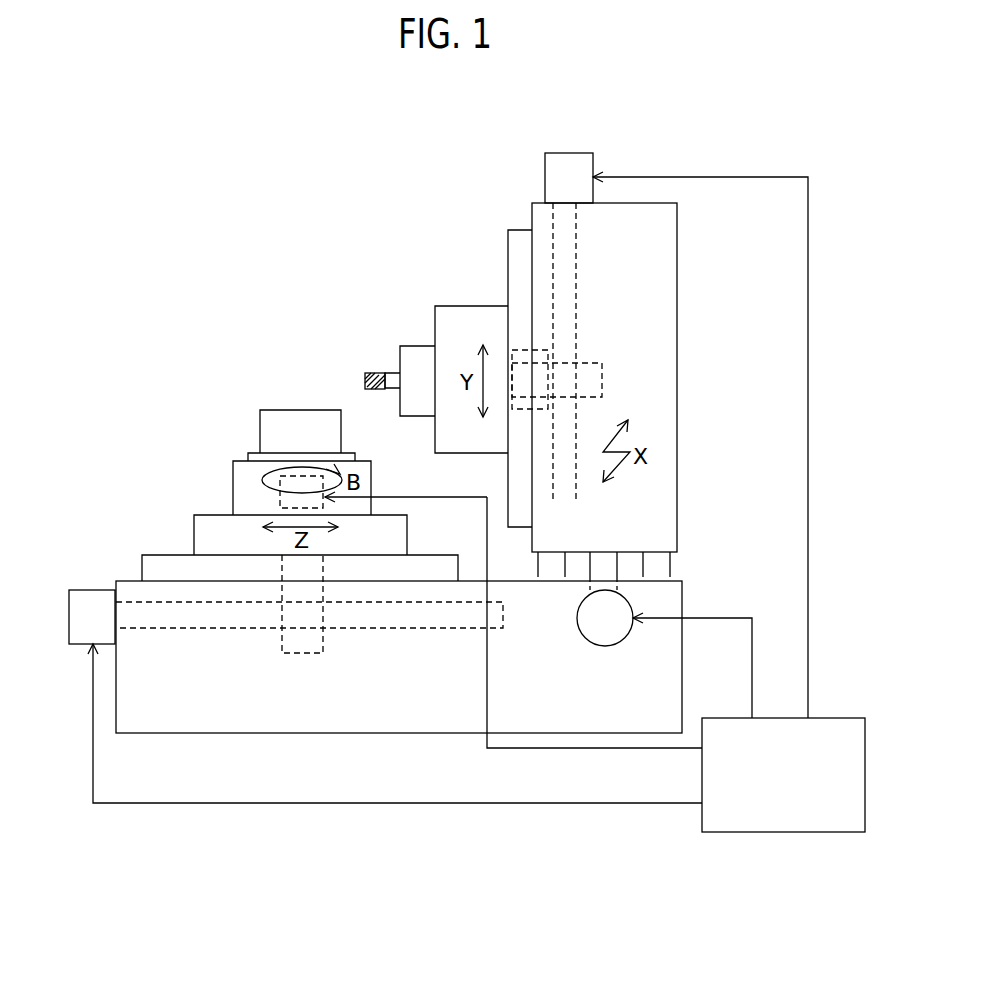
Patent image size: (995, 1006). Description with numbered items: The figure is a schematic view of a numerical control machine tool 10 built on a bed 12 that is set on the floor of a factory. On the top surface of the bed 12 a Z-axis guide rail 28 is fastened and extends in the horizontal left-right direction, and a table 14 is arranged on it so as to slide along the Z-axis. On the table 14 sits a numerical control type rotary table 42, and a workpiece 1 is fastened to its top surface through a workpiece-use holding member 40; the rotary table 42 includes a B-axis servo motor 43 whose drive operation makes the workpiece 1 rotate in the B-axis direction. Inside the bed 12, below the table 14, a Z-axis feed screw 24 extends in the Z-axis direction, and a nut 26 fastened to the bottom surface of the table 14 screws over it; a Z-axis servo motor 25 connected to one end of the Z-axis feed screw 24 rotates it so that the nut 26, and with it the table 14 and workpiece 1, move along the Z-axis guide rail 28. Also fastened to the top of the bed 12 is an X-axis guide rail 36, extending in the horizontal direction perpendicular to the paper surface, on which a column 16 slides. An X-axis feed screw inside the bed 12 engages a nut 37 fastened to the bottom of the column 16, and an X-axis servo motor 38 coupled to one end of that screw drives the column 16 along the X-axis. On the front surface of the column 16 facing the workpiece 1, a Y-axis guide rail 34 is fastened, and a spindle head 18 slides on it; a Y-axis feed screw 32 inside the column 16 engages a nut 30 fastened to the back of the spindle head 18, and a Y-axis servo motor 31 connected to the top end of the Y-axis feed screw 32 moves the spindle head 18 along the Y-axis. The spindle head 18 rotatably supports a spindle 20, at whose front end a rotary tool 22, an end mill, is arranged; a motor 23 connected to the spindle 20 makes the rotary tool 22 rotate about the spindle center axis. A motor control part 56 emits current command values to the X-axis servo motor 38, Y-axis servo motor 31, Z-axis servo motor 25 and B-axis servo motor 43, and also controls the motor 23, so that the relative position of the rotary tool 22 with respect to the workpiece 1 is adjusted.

The numerical control machine tool 10 is at (316, 262).
The bed 12 is at (362, 715).
The table 14 is at (205, 537).
The column 16 is at (660, 282).
The spindle head 18 is at (448, 306).
The spindle 20 is at (420, 346).
The rotary tool 22 is at (369, 366).
The motor 23 is at (527, 350).
The Z-axis feed screw 24 is at (200, 622).
The Z-axis servo motor 25 is at (92, 590).
The nut 26 is at (320, 643).
The Z-axis guide rail 28 is at (152, 563).
The nut 30 is at (590, 353).
The Y-axis servo motor 31 is at (566, 153).
The Y-axis feed screw 32 is at (578, 258).
The Y-axis guide rail 34 is at (508, 245).
The X-axis guide rail 36 is at (553, 563).
The nut 37 is at (617, 565).
The X-axis servo motor 38 is at (633, 635).
The workpiece-use holding member 40 is at (255, 455).
The rotary table 42 is at (240, 477).
The B-axis servo motor 43 is at (280, 495).
The workpiece 1 is at (268, 420).
The motor control part 56 is at (702, 820).